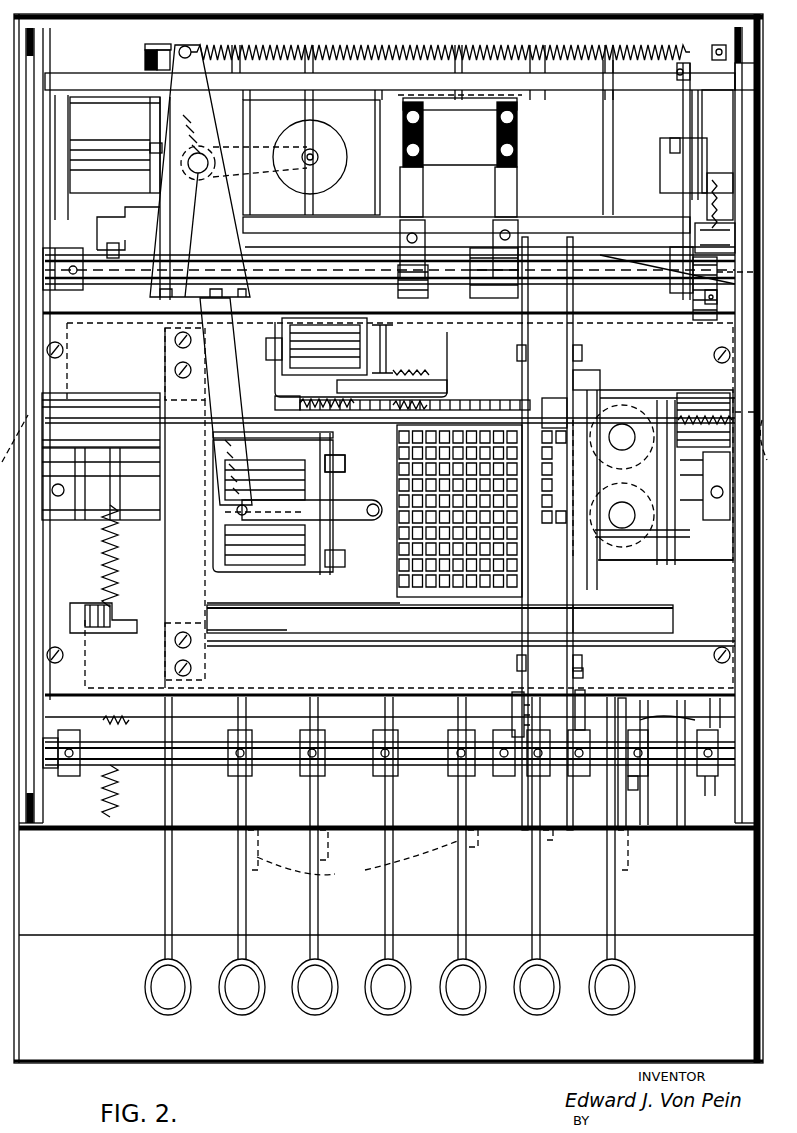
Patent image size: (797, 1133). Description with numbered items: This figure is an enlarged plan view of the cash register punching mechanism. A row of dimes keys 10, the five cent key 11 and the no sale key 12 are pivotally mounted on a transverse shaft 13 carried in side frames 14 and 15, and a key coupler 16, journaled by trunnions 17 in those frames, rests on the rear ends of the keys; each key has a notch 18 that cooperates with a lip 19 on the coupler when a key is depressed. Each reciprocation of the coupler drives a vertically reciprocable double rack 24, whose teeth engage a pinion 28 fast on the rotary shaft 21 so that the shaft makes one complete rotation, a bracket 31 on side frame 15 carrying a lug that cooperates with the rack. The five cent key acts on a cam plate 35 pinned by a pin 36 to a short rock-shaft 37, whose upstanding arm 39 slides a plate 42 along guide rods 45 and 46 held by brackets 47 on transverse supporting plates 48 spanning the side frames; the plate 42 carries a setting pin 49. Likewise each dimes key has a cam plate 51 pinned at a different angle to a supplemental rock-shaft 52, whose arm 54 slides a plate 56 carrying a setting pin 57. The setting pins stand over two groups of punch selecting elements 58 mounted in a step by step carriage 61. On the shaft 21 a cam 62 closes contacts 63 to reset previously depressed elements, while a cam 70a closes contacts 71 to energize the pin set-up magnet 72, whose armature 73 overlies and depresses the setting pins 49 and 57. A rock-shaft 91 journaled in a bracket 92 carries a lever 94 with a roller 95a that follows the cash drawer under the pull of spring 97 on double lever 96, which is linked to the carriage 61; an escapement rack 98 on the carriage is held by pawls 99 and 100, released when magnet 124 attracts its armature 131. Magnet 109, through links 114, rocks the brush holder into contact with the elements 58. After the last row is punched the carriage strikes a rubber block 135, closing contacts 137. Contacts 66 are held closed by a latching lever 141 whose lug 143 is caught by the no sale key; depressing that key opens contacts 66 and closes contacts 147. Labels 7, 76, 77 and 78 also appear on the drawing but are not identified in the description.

The hinge pivot 7 is at (20, 431).
The dimes keys 10 is at (247, 1010).
The five cent key 11 is at (636, 985).
The no sale key 12 is at (155, 206).
The transverse shaft 13 is at (87, 520).
The side frame 14 is at (34, 828).
The side frame 15 is at (742, 828).
The key coupler 16 is at (300, 252).
The trunnions 17 is at (762, 444).
The notch 18 is at (128, 223).
The lip 19 is at (330, 220).
The transverse rotary shaft 21 is at (630, 268).
The double rack 24 is at (708, 305).
The pinion 28 is at (749, 281).
The bracket 31 is at (730, 203).
The cam plate 35 is at (618, 813).
The pin 36 is at (634, 771).
The rock-shaft 37 is at (672, 760).
The upstanding arm 39 is at (580, 698).
The slidably mounted plate 42 is at (575, 623).
The guide rod 45 is at (583, 673).
The guide rod 46 is at (576, 340).
The brackets 47 is at (517, 348).
The transverse supporting plate 48 is at (400, 505).
The setting pin 49 is at (552, 407).
The cam plate 51 is at (438, 855).
The supplemental rock-shaft 52 is at (203, 765).
The upstanding arm 54 is at (512, 723).
The slidably mounted plate 56 is at (522, 623).
The setting pin 57 is at (530, 408).
The punch selecting elements 58 is at (402, 473).
The carriage 61 is at (303, 605).
The cam 62 is at (400, 300).
The contacts 63 is at (400, 231).
The contacts 66 is at (140, 52).
The cam 70a is at (485, 293).
The contacts 71 is at (518, 228).
The pin set-up magnet 72 is at (627, 548).
The armature 73 is at (581, 518).
The gear 76 is at (693, 275).
The plate 77 is at (682, 230).
The plate 78 is at (675, 80).
The rock-shaft 91 is at (195, 180).
The bracket 92 is at (200, 171).
The lever 94 is at (257, 155).
The roller 95a is at (331, 138).
The double lever 96 is at (190, 110).
The spring 97 is at (357, 42).
The escapement rack 98 is at (456, 407).
The pawl 99 is at (390, 425).
The holding pawl 100 is at (268, 412).
The magnet 109 is at (273, 504).
The links 114 is at (347, 444).
The magnet 124 is at (356, 357).
The armature 131 is at (394, 355).
The rubber block 135 is at (123, 608).
The contacts 137 is at (100, 633).
The latching lever 141 is at (143, 131).
The lug 143 is at (148, 147).
The contacts 147 is at (142, 61).